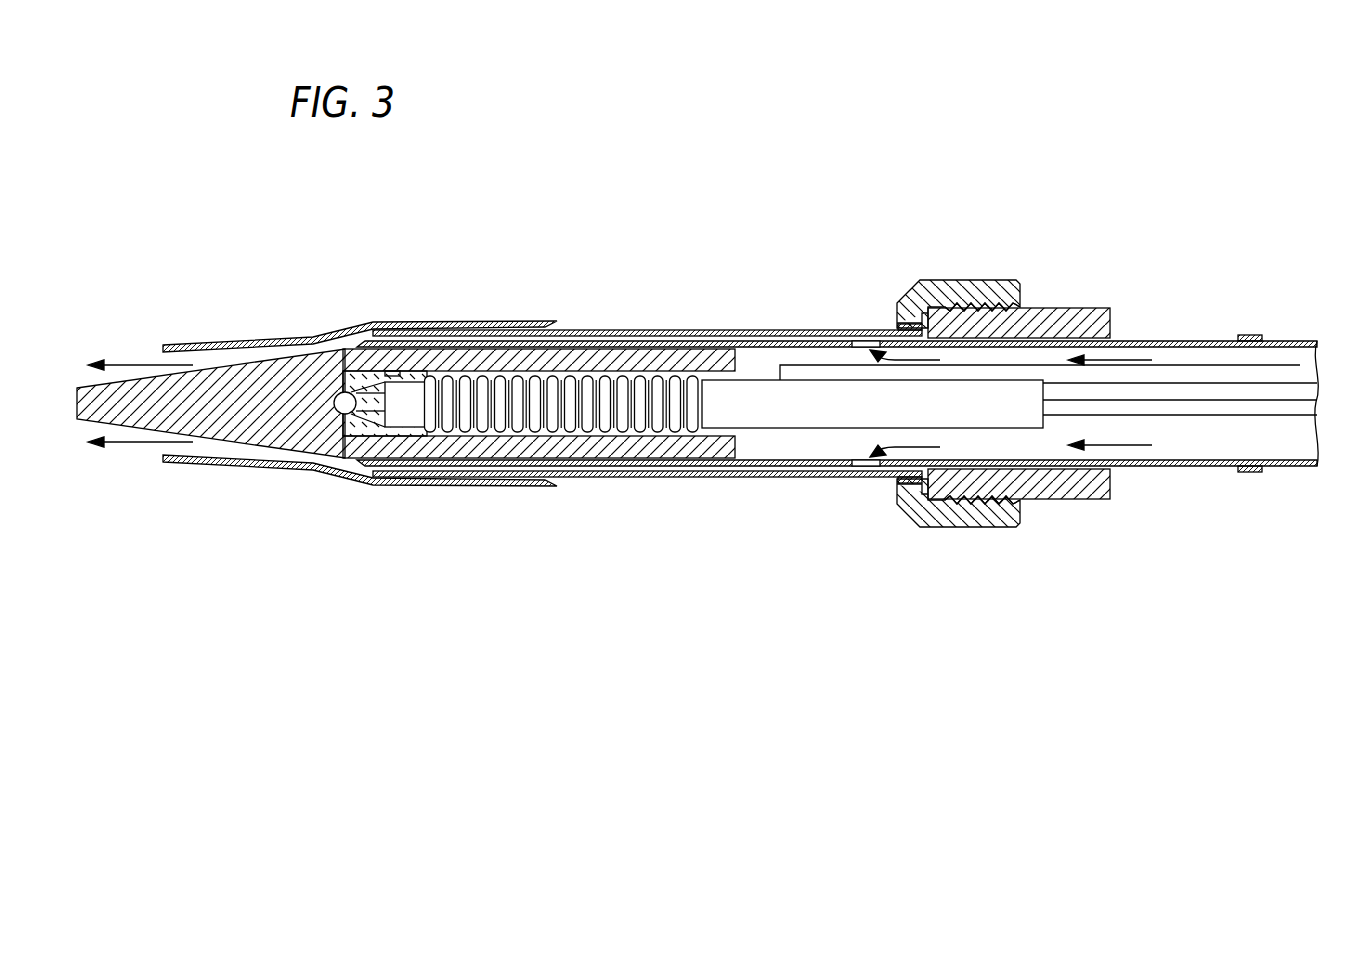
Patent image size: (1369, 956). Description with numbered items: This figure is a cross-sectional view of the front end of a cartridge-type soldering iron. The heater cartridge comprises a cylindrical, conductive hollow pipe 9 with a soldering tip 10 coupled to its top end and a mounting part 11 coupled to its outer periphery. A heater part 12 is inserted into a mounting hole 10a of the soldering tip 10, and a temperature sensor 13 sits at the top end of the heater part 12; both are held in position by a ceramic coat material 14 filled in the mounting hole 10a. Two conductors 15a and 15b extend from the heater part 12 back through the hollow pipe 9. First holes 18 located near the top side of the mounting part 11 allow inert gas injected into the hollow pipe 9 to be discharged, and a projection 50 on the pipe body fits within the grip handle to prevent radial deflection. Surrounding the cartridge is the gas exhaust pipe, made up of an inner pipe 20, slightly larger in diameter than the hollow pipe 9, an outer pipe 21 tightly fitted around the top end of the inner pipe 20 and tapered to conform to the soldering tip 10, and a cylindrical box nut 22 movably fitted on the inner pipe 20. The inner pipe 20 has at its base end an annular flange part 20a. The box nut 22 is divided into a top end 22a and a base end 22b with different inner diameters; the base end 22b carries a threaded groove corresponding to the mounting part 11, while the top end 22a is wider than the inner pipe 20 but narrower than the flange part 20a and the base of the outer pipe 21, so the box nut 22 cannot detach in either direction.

The hollow pipe 9 is at (1165, 318).
The soldering tip 10 is at (76, 400).
The mounting hole 10a is at (400, 371).
The mounting part 11 is at (1072, 312).
The heater part 12 is at (522, 418).
The temperature sensor 13 is at (346, 404).
The ceramic coat material 14 is at (373, 430).
The conductor 15a is at (1300, 373).
The conductor 15b is at (1312, 408).
The first holes 18 is at (862, 345).
The inner pipe 20 is at (792, 333).
The flange part 20a is at (922, 488).
The outer pipe 21 is at (240, 343).
The box nut 22 is at (1000, 212).
The top end 22a is at (905, 308).
The base end 22b is at (972, 292).
The projection 50 is at (1255, 478).